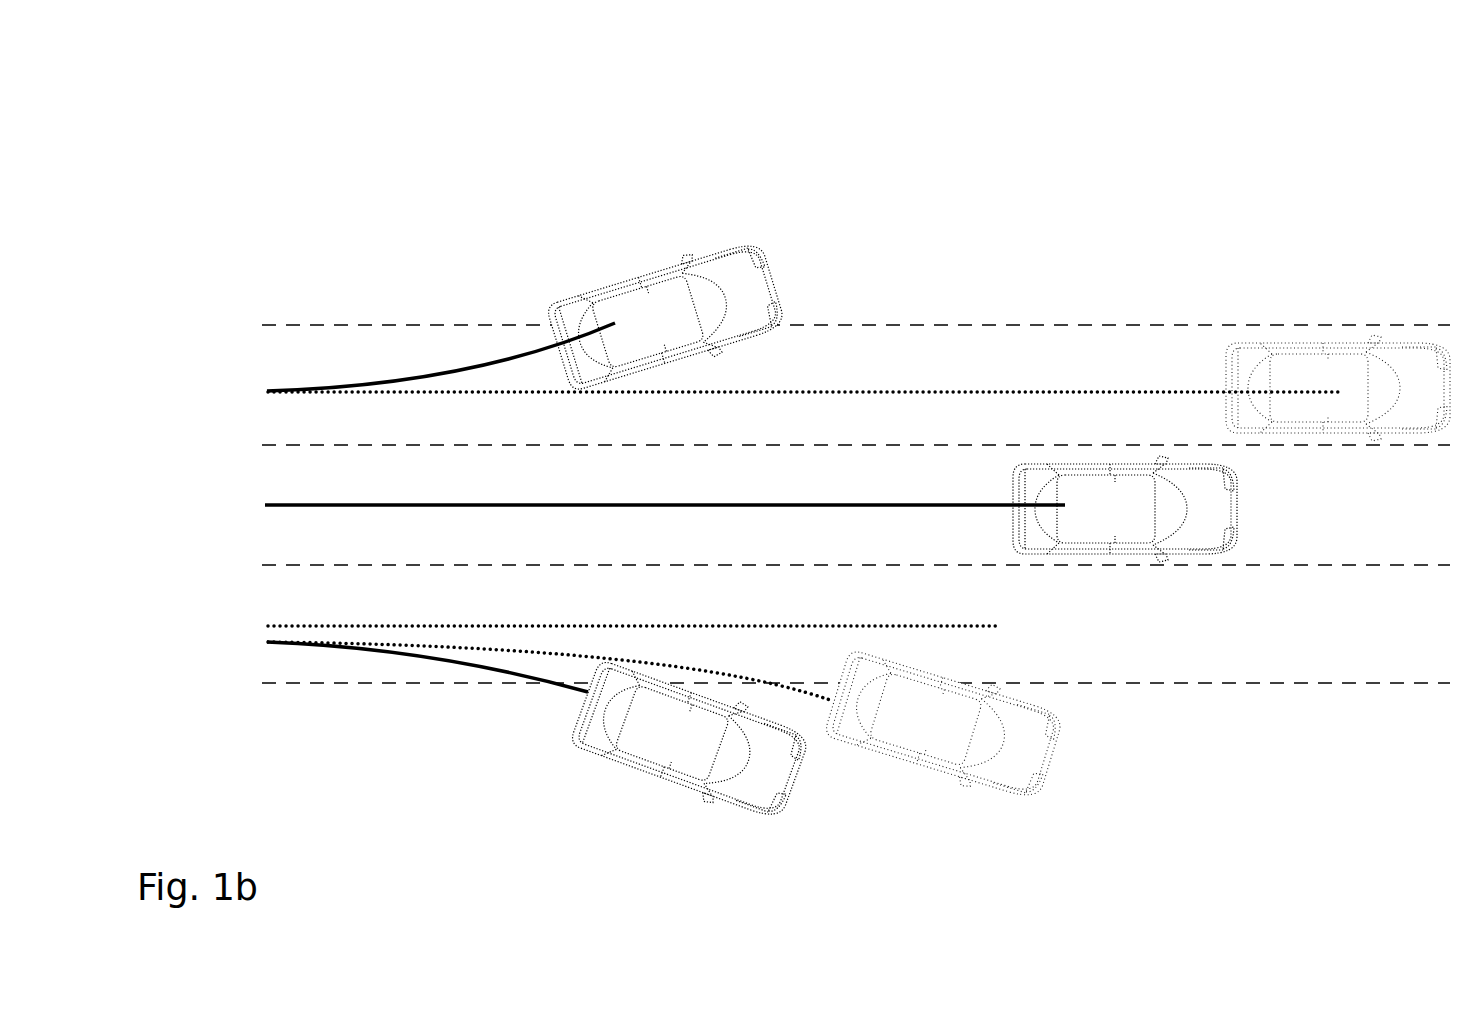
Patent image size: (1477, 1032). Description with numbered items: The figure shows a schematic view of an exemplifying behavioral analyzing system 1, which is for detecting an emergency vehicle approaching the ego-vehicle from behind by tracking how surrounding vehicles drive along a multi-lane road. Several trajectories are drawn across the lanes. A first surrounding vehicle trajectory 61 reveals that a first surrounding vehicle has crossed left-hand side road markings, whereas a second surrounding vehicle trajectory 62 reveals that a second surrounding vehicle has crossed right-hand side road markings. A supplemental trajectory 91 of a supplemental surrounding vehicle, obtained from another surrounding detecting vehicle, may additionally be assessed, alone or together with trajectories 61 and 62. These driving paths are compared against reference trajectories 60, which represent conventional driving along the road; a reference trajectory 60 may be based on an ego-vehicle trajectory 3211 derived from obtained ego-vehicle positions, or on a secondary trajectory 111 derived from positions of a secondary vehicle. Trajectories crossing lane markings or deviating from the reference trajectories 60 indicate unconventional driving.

The behavioral analyzing system 1 is at (783, 84).
The reference trajectory 60 is at (995, 638).
The first surrounding vehicle trajectory 61 is at (465, 352).
The second surrounding vehicle trajectory 62 is at (485, 677).
The supplemental trajectory 91 is at (780, 695).
The secondary trajectory 111 is at (912, 372).
The ego-vehicle trajectory 3211 is at (253, 489).